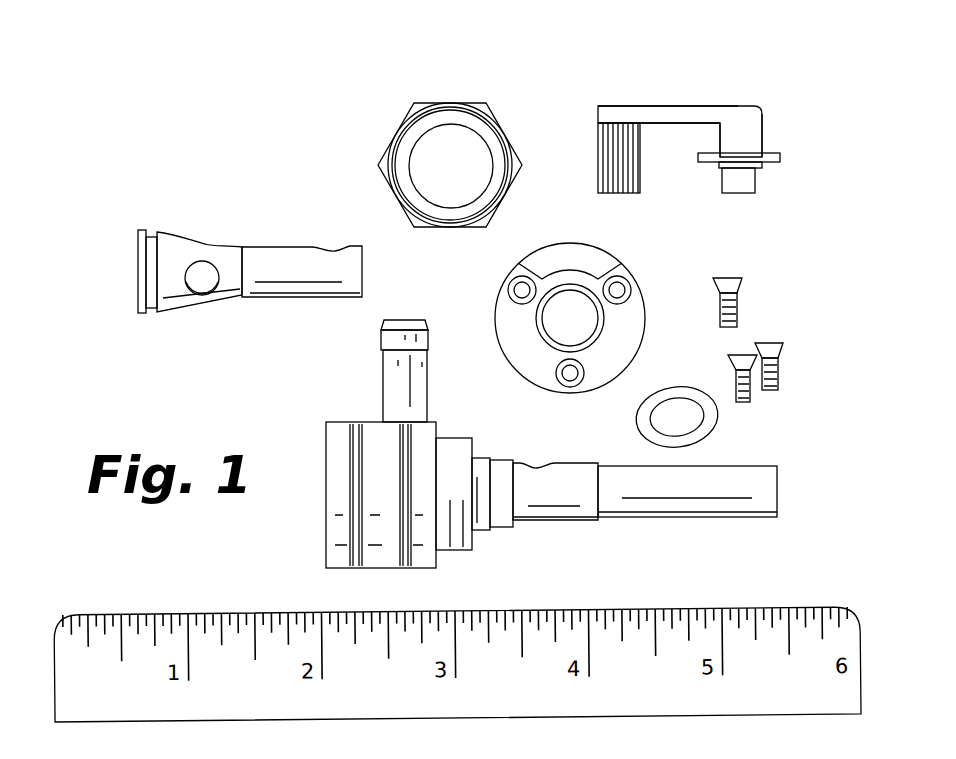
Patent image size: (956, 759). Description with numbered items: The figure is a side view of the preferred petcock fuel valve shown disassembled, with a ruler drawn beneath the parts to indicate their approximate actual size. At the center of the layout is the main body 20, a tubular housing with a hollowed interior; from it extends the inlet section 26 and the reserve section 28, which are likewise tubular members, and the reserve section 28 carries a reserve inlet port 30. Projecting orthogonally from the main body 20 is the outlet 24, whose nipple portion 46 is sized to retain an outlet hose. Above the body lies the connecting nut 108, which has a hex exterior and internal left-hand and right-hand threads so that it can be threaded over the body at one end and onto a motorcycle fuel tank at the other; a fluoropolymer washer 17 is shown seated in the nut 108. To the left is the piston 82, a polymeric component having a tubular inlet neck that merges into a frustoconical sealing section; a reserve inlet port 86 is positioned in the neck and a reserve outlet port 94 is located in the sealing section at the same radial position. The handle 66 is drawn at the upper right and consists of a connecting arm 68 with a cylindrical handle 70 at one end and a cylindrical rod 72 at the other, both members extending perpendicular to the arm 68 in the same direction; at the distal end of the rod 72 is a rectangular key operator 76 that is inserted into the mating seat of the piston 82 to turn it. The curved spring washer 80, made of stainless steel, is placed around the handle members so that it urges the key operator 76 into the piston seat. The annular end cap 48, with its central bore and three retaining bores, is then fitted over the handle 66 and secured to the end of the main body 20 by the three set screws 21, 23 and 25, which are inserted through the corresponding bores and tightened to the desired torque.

The washer 17 is at (494, 150).
The main body 20 is at (380, 461).
The set screw 21 is at (742, 303).
The set screw 23 is at (783, 371).
The outlet 24 is at (382, 397).
The set screw 25 is at (757, 400).
The inlet section 26 is at (740, 500).
The reserve section 28 is at (572, 492).
The reserve inlet port 30 is at (645, 495).
The nipple portion 46 is at (430, 340).
The end cap 48 is at (648, 304).
The handle 66 is at (687, 110).
The connecting arm 68 is at (695, 105).
The cylindrical handle 70 is at (597, 170).
The cylindrical rod 72 is at (749, 134).
The key operator 76 is at (752, 182).
The spring washer 80 is at (677, 388).
The piston 82 is at (250, 232).
The reserve inlet port 86 is at (327, 240).
The reserve outlet port 94 is at (205, 230).
The connecting nut 108 is at (431, 91).